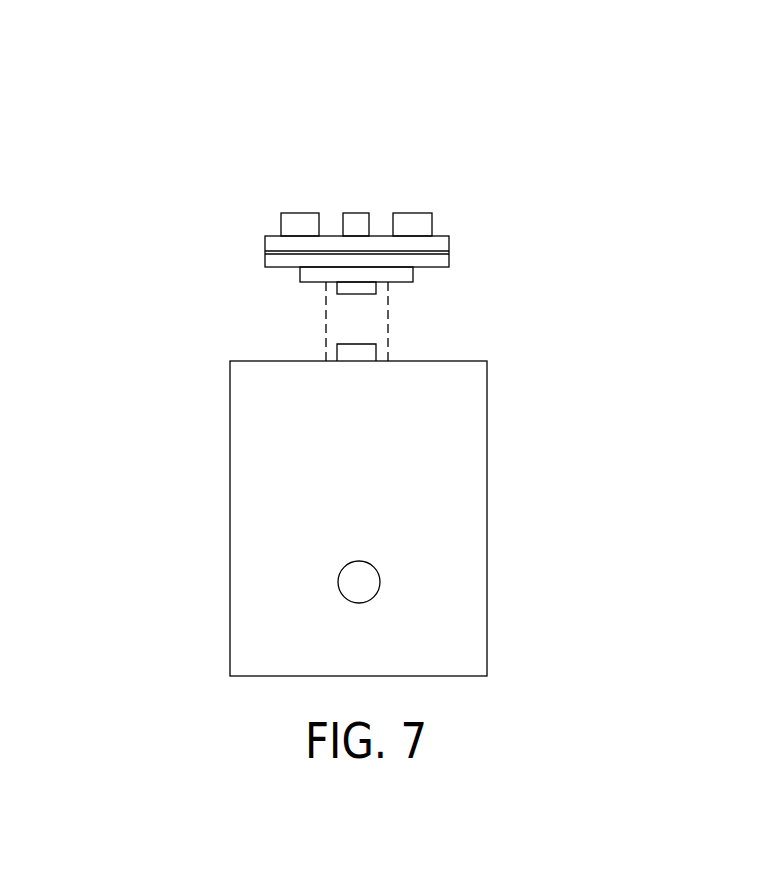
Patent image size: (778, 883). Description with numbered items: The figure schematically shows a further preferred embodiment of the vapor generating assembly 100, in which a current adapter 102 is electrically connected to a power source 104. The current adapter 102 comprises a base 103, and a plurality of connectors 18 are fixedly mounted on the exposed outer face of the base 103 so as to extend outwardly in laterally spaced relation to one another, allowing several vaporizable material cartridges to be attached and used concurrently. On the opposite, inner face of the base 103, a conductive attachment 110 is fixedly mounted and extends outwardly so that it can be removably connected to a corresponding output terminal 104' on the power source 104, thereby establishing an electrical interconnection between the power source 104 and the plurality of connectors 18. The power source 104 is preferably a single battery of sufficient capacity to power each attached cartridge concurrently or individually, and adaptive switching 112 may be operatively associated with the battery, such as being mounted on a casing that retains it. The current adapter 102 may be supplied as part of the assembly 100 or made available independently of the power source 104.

The connectors 18 is at (300, 220).
The assembly 100 is at (488, 245).
The current adapter 102 is at (222, 235).
The base 103 is at (273, 259).
The power source 104 is at (445, 518).
The output terminal 104' is at (244, 323).
The conductive attachment 110 is at (368, 287).
The adaptive switching 112 is at (338, 578).